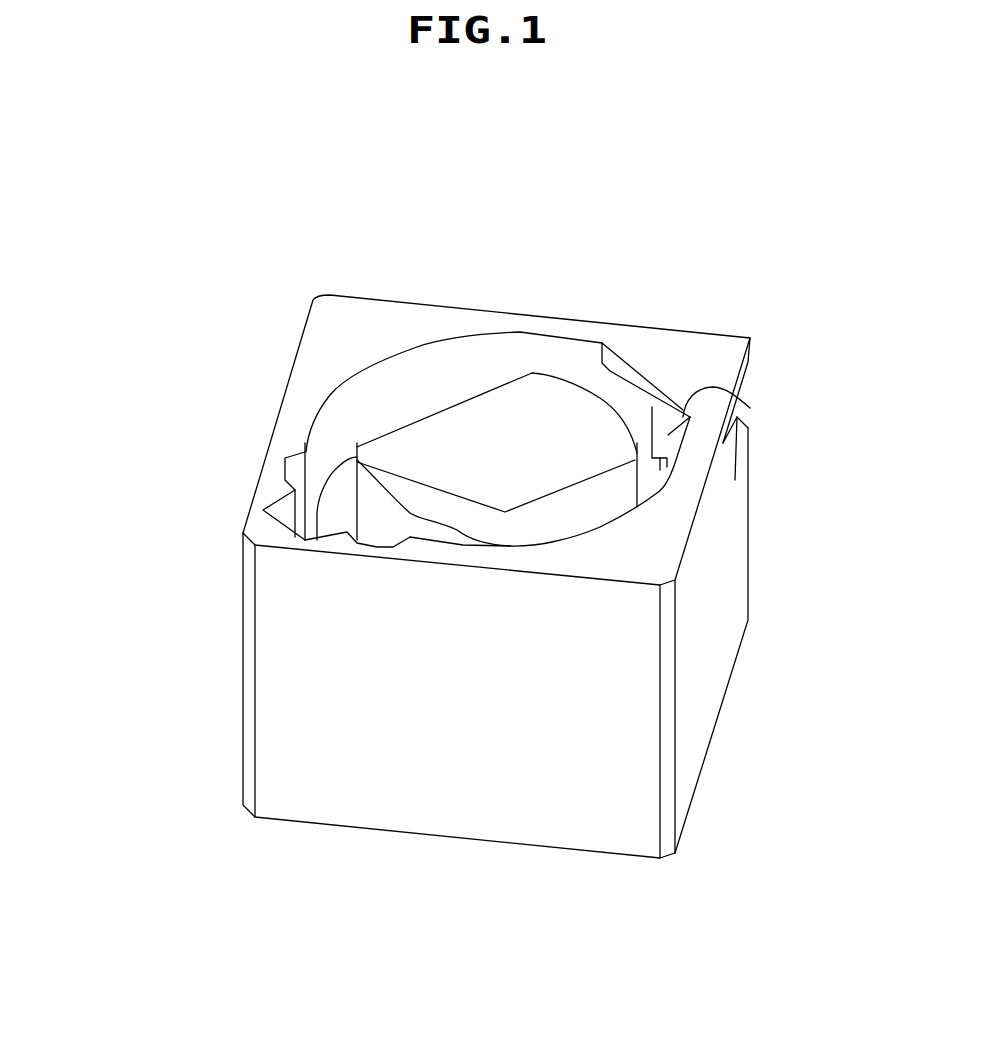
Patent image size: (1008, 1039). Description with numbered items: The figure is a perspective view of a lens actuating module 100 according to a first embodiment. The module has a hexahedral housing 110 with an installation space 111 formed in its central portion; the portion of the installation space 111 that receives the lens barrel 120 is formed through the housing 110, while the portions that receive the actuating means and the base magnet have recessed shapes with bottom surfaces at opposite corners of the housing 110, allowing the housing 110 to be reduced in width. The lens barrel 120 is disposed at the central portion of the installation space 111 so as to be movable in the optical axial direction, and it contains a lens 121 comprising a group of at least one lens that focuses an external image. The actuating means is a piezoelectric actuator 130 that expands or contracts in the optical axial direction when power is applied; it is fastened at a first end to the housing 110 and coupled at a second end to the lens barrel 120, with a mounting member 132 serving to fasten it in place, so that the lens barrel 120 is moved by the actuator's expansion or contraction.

The lens actuating module 100 is at (203, 213).
The housing 110 is at (397, 317).
The installation space 111 is at (520, 350).
The lens barrel 120 is at (338, 503).
The lens 121 is at (397, 443).
The piezoelectric actuator 130 is at (740, 402).
The mounting member 132 is at (703, 350).